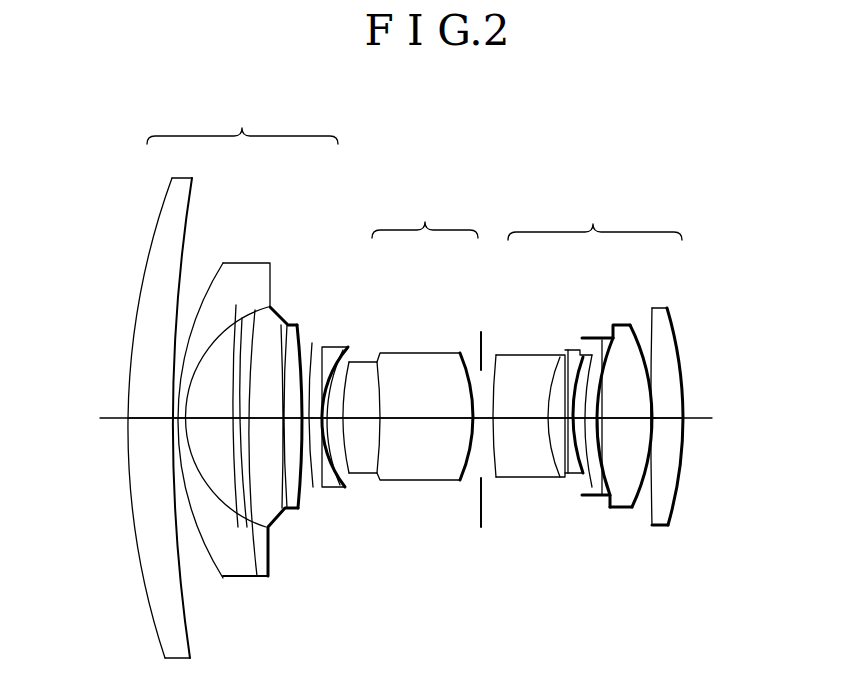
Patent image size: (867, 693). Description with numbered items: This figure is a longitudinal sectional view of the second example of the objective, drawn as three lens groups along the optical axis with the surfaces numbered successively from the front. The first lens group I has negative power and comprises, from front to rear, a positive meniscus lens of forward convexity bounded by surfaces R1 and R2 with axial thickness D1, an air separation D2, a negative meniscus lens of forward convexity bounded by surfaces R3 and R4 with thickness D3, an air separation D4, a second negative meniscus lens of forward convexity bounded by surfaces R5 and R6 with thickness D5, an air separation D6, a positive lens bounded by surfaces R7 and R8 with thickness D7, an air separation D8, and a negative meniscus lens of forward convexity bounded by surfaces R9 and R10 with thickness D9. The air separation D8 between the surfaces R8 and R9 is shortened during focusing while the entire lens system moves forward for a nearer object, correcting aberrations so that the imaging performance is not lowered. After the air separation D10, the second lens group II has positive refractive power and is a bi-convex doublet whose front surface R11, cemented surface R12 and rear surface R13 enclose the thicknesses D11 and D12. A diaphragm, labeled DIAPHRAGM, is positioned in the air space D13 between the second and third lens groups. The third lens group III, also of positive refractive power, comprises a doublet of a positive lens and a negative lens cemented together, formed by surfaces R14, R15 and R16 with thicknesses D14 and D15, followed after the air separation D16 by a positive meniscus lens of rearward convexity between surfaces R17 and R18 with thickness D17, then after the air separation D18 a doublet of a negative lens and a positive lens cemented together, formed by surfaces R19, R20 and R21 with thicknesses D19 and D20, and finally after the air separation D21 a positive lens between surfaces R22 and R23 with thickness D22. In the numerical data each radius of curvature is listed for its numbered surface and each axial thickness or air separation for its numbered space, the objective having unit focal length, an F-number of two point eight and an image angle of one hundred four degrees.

The first lens group I is at (242, 122).
The second lens group II is at (425, 216).
The third lens group III is at (595, 217).
The first lens surface R1 is at (166, 204).
The second lens surface R2 is at (194, 194).
The third lens surface R3 is at (218, 268).
The fourth lens surface R4 is at (238, 318).
The fifth lens surface R5 is at (272, 310).
The sixth lens surface R6 is at (288, 324).
The seventh lens surface R7 is at (300, 333).
The eighth lens surface R8 is at (318, 335).
The ninth lens surface R9 is at (330, 358).
The tenth lens surface R10 is at (350, 378).
The eleventh lens surface R11 is at (378, 372).
The twelfth lens surface R12 is at (388, 366).
The thirteenth lens surface R13 is at (470, 378).
The fourteenth lens surface R14 is at (492, 360).
The fifteenth lens surface R15 is at (546, 363).
The sixteenth lens surface R16 is at (558, 363).
The seventeenth lens surface R17 is at (570, 363).
The eighteenth lens surface R18 is at (578, 360).
The nineteenth lens surface R19 is at (583, 355).
The twentieth lens surface R20 is at (608, 347).
The twenty-first lens surface R21 is at (642, 350).
The twenty-second lens surface R22 is at (653, 337).
The twenty-third lens surface R23 is at (674, 324).
The first axial thickness D1 is at (140, 420).
The second axial air separation D2 is at (186, 565).
The third axial thickness D3 is at (227, 577).
The fourth axial air separation D4 is at (198, 420).
The fifth axial thickness D5 is at (258, 577).
The sixth axial air separation D6 is at (261, 420).
The seventh axial thickness D7 is at (300, 512).
The eighth axial air separation D8 is at (303, 478).
The ninth axial thickness D9 is at (327, 481).
The tenth axial air separation D10 is at (345, 476).
The eleventh axial thickness D11 is at (357, 420).
The twelfth axial thickness D12 is at (415, 420).
The thirteenth axial air separation D13 is at (470, 478).
The fourteenth axial thickness D14 is at (506, 420).
The fifteenth axial thickness D15 is at (548, 473).
The sixteenth axial air separation D16 is at (556, 502).
The seventeenth axial thickness D17 is at (568, 502).
The eighteenth axial air separation D18 is at (581, 500).
The nineteenth axial thickness D19 is at (612, 500).
The twentieth axial thickness D20 is at (614, 420).
The twenty-first axial air separation D21 is at (640, 500).
The twenty-second axial thickness D22 is at (672, 445).
The diaphragm DIAPHRAGM is at (482, 530).